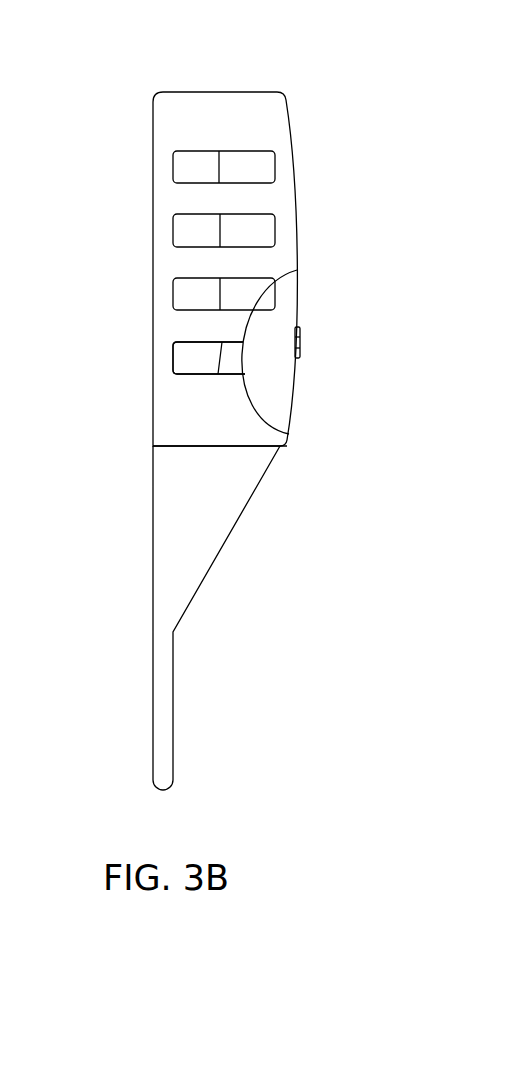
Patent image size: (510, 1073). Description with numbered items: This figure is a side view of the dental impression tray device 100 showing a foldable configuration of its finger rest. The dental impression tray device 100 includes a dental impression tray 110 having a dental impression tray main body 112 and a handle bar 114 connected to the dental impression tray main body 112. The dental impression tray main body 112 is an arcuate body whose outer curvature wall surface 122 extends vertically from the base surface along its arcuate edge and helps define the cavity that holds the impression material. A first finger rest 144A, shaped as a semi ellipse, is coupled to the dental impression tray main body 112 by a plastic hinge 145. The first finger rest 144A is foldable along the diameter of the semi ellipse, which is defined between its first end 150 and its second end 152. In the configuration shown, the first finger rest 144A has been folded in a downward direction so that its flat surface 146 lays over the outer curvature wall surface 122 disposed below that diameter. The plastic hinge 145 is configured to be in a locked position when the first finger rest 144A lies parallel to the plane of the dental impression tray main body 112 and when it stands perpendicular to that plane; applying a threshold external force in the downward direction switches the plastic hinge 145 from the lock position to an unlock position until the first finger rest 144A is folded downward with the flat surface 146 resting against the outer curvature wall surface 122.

The dental impression tray device 100 is at (232, 402).
The dental impression tray 110 is at (343, 510).
The dental impression tray main body 112 is at (125, 188).
The handle bar 114 is at (232, 618).
The outer curvature wall surface 122 is at (224, 92).
The first finger rest 144A is at (243, 338).
The plastic hinge 145 is at (301, 339).
The flat surface 146 is at (273, 382).
The first end 150 is at (288, 434).
The second end 152 is at (298, 271).